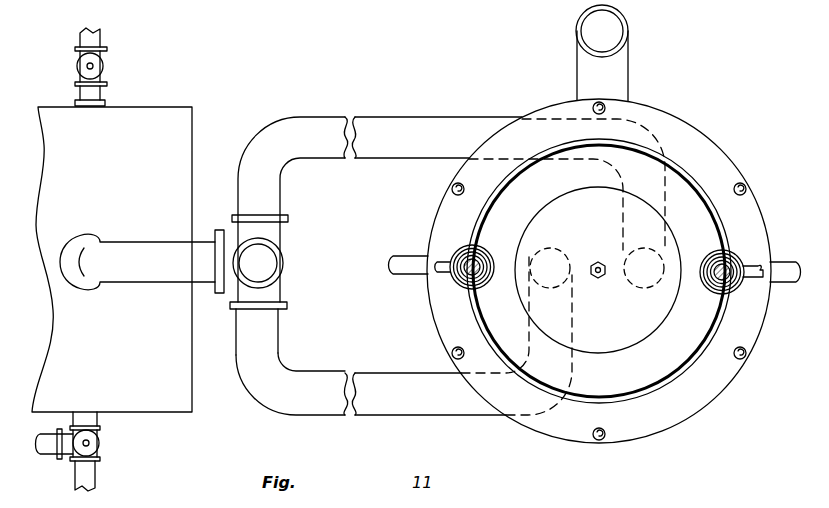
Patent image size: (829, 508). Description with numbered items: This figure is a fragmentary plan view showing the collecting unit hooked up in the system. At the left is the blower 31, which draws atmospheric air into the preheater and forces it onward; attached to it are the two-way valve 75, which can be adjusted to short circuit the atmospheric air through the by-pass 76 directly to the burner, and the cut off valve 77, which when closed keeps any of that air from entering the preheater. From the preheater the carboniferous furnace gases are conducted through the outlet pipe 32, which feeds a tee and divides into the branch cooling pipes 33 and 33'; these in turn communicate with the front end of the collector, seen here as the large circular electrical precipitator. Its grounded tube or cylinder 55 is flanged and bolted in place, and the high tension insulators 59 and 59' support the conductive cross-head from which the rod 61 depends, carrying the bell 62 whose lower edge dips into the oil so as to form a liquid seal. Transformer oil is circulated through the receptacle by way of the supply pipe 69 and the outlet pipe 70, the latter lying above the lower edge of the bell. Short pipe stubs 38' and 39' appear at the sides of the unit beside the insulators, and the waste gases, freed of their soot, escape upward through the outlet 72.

The blower 31 is at (134, 409).
The outlet pipe 32 is at (122, 272).
The branch cooling pipe 33 is at (447, 223).
The branch cooling pipe 33' is at (404, 331).
The left pipe stub 38' is at (395, 253).
The right pipe stub 39' is at (789, 292).
The tube or cylinder 55 is at (673, 373).
The high tension insulator 59 is at (724, 258).
The high tension insulator 59' is at (463, 259).
The rod 61 is at (596, 262).
The bell 62 is at (568, 204).
The supply pipe 69 is at (751, 282).
The outlet pipe 70 is at (443, 272).
The outlet 72 is at (584, 80).
The two-way valve 75 is at (99, 449).
The by-pass 76 is at (55, 448).
The cut off valve 77 is at (103, 66).